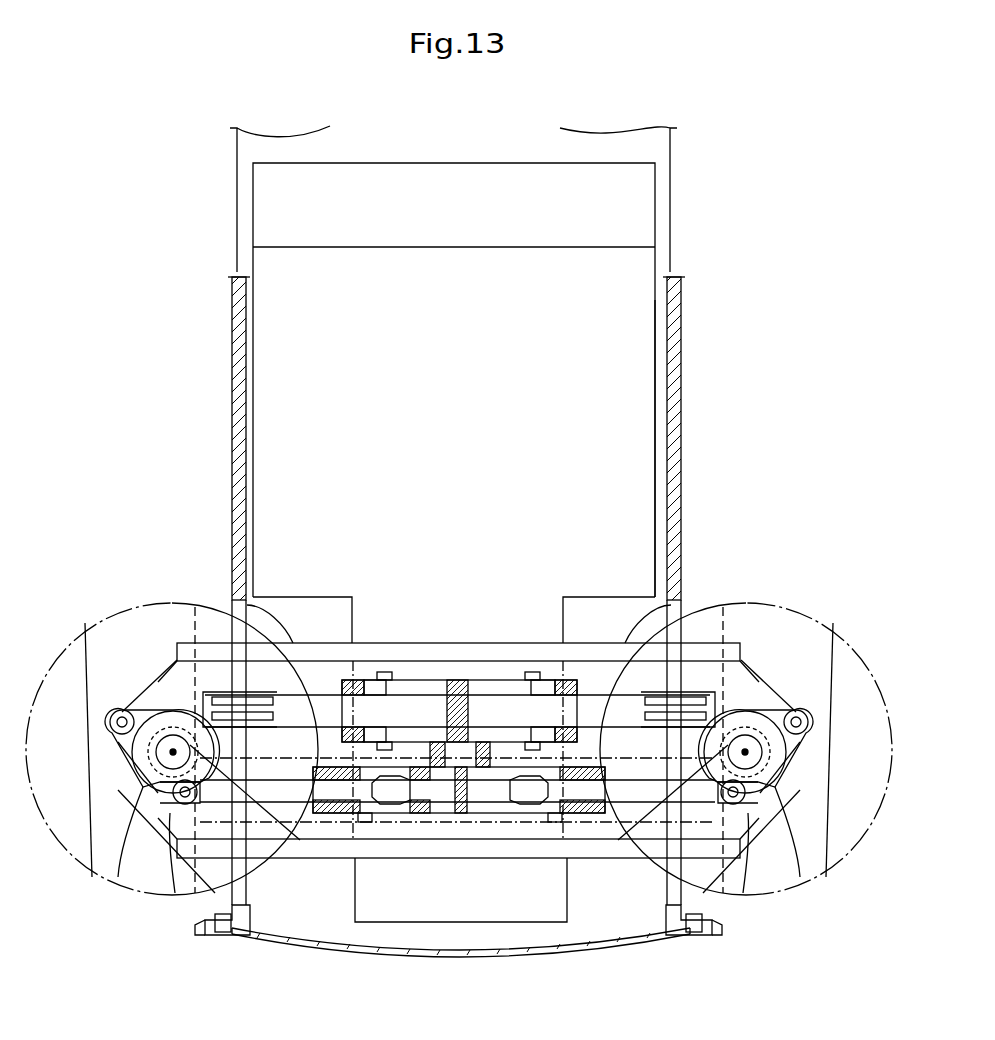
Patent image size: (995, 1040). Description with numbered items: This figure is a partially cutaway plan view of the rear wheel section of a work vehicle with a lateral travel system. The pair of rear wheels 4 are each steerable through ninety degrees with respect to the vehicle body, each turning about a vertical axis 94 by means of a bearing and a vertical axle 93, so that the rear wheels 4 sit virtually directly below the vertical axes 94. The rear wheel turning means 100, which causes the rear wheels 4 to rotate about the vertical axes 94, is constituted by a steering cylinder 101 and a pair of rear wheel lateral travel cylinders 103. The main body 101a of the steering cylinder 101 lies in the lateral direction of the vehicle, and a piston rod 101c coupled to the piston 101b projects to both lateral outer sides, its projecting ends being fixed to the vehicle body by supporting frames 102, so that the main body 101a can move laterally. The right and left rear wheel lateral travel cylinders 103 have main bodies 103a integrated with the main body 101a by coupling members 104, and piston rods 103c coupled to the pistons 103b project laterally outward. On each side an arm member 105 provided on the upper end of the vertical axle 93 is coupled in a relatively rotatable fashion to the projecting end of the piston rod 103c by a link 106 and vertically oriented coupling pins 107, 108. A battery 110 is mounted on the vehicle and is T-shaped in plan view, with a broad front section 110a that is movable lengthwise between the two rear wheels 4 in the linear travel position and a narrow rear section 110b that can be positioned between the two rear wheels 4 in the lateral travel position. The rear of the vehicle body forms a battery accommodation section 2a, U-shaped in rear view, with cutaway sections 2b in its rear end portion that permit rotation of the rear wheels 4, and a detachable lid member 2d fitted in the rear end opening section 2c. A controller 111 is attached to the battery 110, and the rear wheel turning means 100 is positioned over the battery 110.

The controller 111 is at (400, 205).
The battery 110 is at (254, 432).
The front section of the battery 110a is at (612, 332).
The rear section of the battery 110b is at (368, 924).
The battery accommodation section 2a is at (681, 390).
The cutaway sections 2b is at (692, 605).
The rear end opening section 2c is at (622, 950).
The lid member 2d is at (526, 957).
The rear wheel turning means 100 is at (476, 652).
The steering cylinder 101 is at (400, 678).
The main body of the steering cylinder 101a is at (497, 693).
The piston of the steering cylinder 101b is at (443, 678).
The piston rod of the steering cylinder 101c is at (590, 690).
The supporting frames 102 is at (304, 688).
The rear wheel lateral travel cylinder 103 is at (493, 822).
The main body of the rear wheel lateral travel cylinder 103a is at (588, 810).
The piston of the rear wheel lateral travel cylinder 103b is at (418, 810).
The piston rod of the rear wheel lateral travel cylinder 103c is at (338, 812).
The coupling members 104 is at (497, 815).
The arm member 105 is at (150, 712).
The link 106 is at (195, 640).
The coupling pin 107 is at (800, 712).
The coupling pin 108 is at (738, 805).
The vertical axle 93 is at (93, 880).
The vertical axis 94 is at (165, 775).
The rear wheel 4 is at (175, 893).